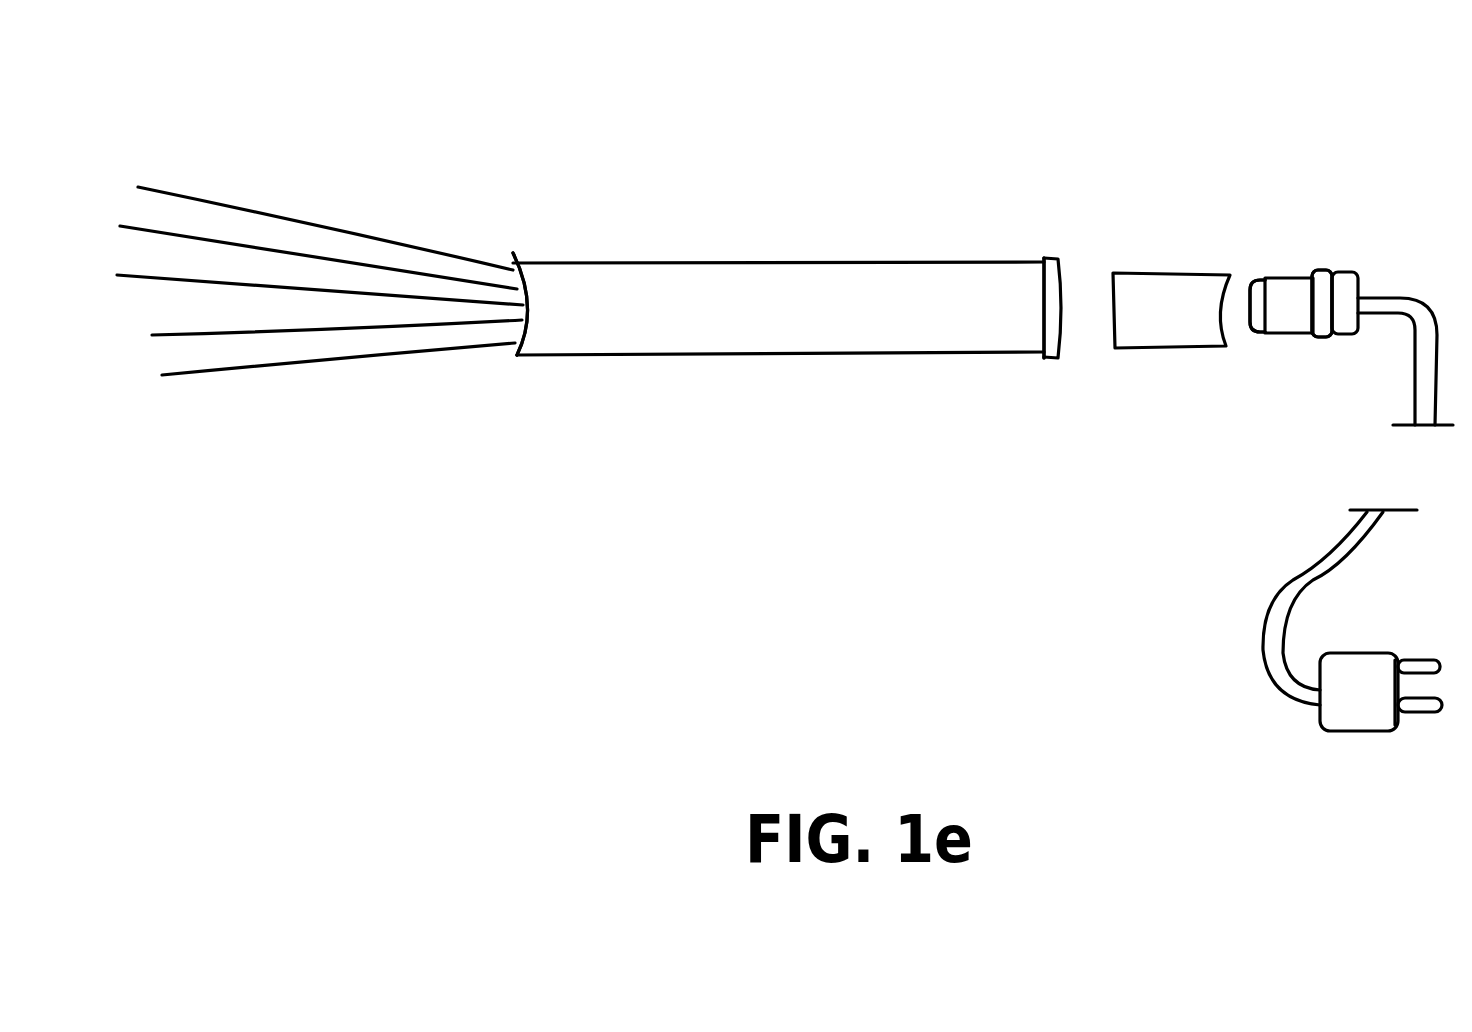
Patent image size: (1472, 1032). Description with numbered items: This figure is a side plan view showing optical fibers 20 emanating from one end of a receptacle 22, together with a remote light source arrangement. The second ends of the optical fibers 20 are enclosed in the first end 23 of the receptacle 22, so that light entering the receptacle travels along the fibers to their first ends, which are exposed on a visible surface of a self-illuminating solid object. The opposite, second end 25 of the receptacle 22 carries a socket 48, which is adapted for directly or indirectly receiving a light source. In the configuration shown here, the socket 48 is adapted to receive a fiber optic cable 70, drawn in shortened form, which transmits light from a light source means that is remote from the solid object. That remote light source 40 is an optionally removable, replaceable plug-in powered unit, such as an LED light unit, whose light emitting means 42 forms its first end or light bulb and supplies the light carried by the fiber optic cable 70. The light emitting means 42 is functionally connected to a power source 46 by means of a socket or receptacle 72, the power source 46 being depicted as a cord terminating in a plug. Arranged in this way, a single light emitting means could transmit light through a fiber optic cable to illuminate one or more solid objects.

The optical fibers 20 is at (243, 205).
The receptacle 22 is at (815, 338).
The first end of receptacle 23 is at (518, 355).
The second end of receptacle 25 is at (1030, 352).
The socket 48 is at (1046, 262).
The fiber optic cable 70 is at (1167, 270).
The light source 40 is at (1292, 278).
The light emitting means 42 is at (1268, 278).
The socket or receptacle 72 is at (1335, 270).
The power source 46 is at (1378, 318).